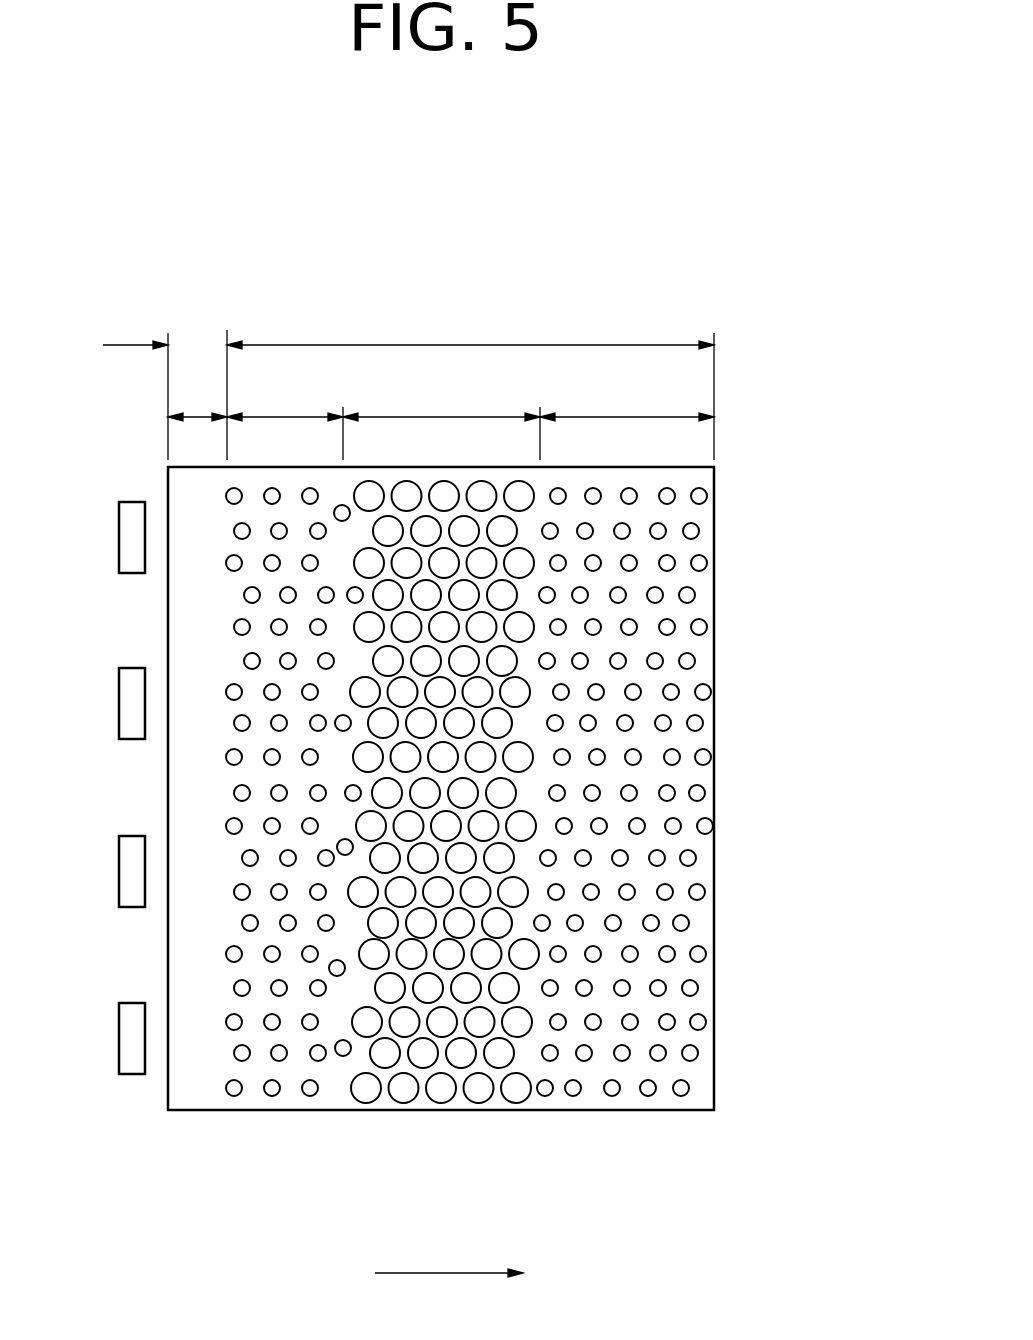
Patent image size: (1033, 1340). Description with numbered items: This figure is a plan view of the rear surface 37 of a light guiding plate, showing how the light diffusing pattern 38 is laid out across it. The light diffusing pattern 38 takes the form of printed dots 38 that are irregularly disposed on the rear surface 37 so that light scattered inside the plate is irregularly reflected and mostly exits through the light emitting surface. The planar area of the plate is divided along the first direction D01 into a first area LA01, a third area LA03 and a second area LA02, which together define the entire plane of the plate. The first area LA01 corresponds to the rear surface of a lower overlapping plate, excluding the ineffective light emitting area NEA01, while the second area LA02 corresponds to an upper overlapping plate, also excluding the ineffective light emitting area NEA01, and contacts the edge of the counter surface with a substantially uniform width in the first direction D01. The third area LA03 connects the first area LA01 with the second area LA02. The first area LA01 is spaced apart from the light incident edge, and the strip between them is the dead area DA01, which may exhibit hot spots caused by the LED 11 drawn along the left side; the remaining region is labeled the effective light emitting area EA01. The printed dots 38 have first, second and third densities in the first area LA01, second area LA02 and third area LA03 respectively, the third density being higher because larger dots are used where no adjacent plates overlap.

The LED 11 is at (131, 1066).
The rear surface 37 is at (587, 1092).
The light diffusing pattern 38 is at (398, 1092).
The ineffective light emitting area NEA01 is at (173, 323).
The effective light emitting area EA01 is at (470, 323).
The dead area DA01 is at (197, 417).
The first area LA01 is at (285, 394).
The second area LA02 is at (627, 394).
The third area LA03 is at (441, 394).
The first direction D01 is at (481, 1276).